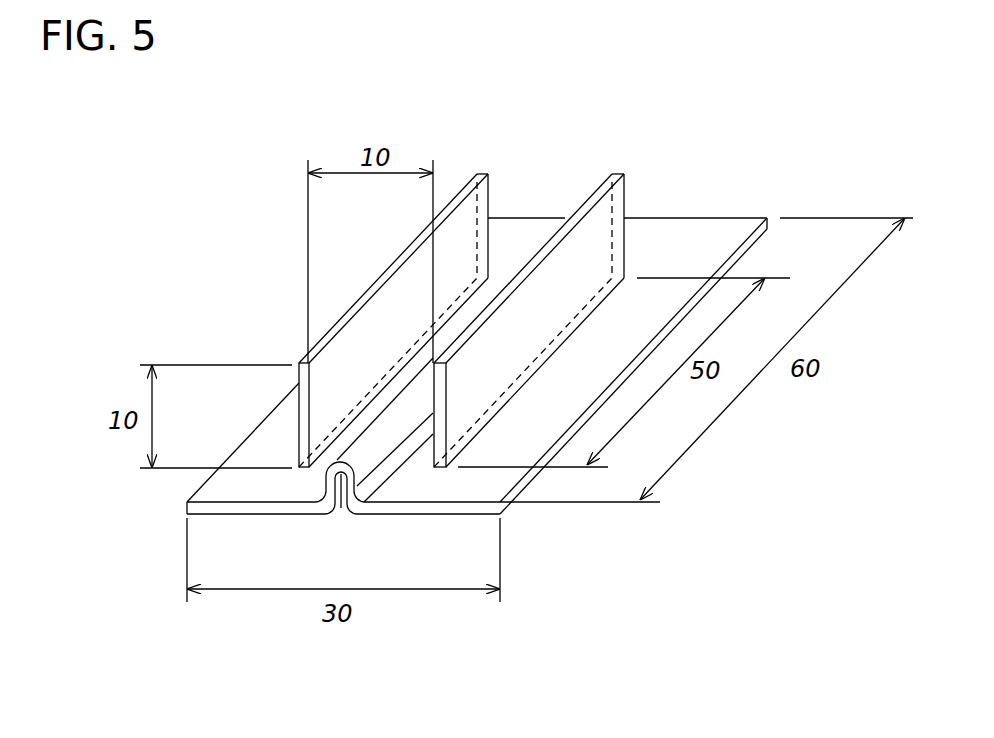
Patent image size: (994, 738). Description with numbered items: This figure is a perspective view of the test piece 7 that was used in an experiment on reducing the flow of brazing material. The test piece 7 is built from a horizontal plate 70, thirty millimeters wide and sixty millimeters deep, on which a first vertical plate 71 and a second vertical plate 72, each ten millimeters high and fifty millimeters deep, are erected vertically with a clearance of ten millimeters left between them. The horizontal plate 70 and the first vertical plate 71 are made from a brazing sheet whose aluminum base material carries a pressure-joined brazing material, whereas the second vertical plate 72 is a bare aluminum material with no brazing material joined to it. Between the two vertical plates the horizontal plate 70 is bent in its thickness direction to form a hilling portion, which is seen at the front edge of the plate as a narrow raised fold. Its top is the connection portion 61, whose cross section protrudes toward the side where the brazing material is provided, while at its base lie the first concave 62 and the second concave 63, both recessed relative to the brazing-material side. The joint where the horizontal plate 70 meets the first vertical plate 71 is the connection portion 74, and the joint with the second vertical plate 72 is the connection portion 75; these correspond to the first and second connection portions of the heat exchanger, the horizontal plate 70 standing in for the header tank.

The test piece 7 is at (722, 133).
The horizontal plate 70 is at (227, 495).
The first vertical plate 71 is at (464, 215).
The second vertical plate 72 is at (600, 223).
The connection portion 74 is at (462, 298).
The connection portion 75 is at (592, 297).
The connection portion 61 is at (337, 512).
The first concave 62 is at (327, 500).
The second concave 63 is at (348, 457).